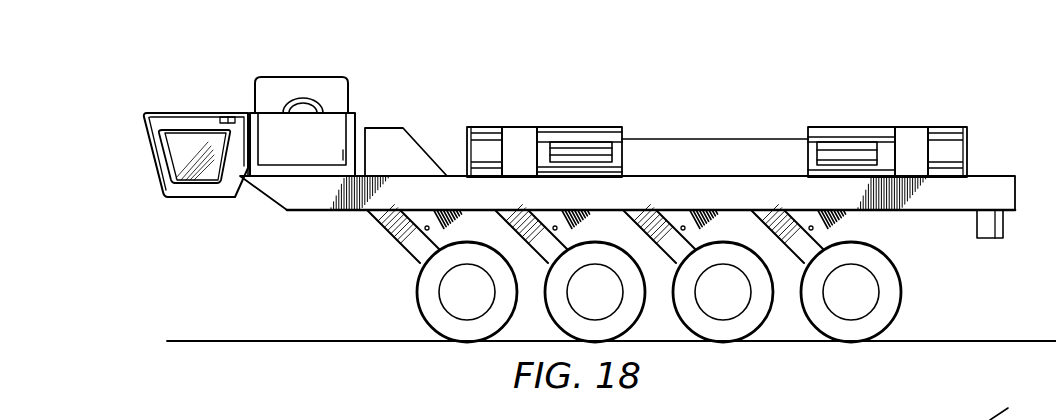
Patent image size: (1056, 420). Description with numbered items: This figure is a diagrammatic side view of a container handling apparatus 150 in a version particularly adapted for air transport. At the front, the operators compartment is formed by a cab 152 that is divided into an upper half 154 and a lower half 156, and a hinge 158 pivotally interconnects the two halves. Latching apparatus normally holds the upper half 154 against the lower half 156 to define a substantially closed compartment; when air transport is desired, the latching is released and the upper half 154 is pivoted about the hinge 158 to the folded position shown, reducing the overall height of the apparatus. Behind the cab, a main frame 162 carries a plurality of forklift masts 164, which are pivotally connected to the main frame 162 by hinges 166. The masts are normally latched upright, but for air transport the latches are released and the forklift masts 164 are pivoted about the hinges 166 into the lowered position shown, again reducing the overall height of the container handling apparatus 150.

The container handling apparatus 150 is at (497, 78).
The cab 152 is at (136, 108).
The upper half 154 is at (157, 165).
The lower half 156 is at (353, 119).
The hinge 158 is at (249, 112).
The main frame 162 is at (358, 195).
The forklift masts 164 is at (543, 127).
The hinges 166 is at (465, 173).